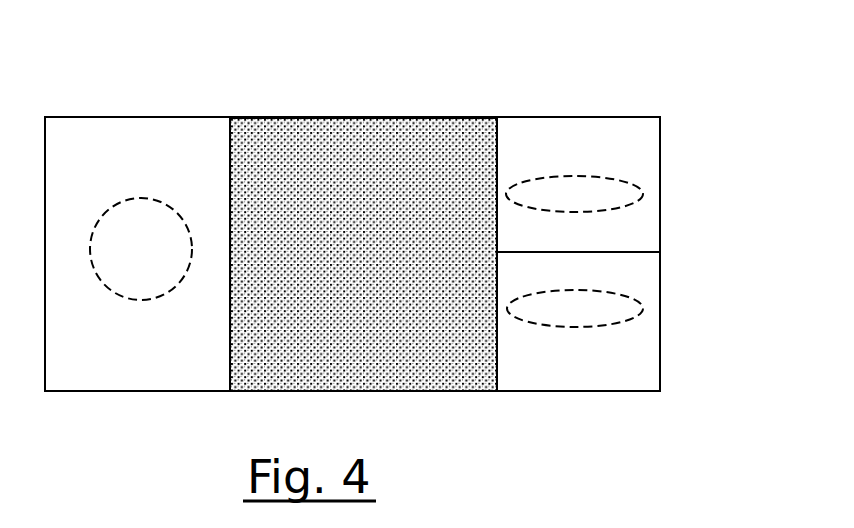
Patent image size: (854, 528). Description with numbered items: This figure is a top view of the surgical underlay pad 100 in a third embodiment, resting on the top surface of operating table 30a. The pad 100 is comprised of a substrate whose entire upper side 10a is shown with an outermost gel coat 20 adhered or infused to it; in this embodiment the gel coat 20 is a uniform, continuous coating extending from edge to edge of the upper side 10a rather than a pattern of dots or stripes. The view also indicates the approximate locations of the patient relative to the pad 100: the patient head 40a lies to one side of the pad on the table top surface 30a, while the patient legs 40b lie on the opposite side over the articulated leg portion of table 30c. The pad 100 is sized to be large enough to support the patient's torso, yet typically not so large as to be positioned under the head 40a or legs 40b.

The surgical underlay pad 100 is at (609, 85).
The upper (patient) side of substrate 10a is at (532, 368).
The gel coat 20 is at (315, 162).
The top surface of operating table 30a is at (135, 378).
The articulated leg portion of table 30c is at (648, 293).
The patient head 40a is at (131, 263).
The patient leg 40b is at (583, 180).